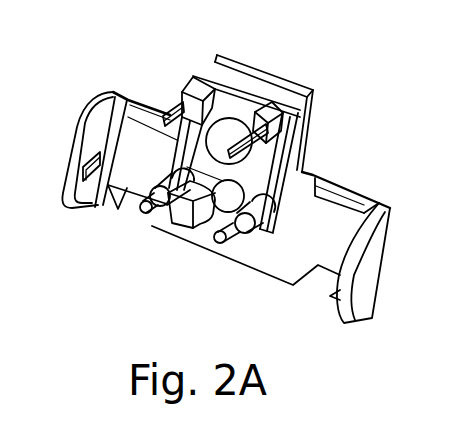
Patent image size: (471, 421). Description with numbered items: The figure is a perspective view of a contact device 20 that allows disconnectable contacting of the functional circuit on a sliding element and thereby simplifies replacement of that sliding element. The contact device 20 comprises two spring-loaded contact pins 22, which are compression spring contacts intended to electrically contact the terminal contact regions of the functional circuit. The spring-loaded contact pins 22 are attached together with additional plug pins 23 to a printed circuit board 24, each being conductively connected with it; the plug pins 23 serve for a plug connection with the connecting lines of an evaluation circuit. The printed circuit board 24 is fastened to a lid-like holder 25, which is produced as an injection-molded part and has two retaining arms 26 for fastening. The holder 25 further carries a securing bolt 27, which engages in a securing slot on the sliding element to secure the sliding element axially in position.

The contact device 20 is at (156, 80).
The spring-loaded contact pins 22 is at (143, 212).
The plug pins 23 is at (173, 108).
The printed circuit board 24 is at (280, 162).
The lid-like holder 25 is at (366, 183).
The retaining arms 26 is at (88, 118).
The securing bolt 27 is at (180, 214).